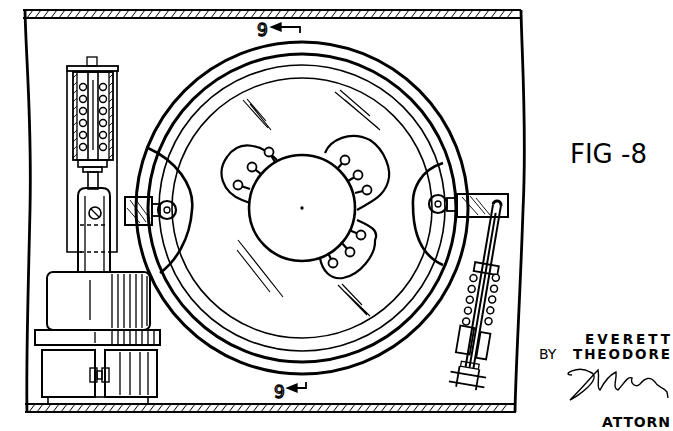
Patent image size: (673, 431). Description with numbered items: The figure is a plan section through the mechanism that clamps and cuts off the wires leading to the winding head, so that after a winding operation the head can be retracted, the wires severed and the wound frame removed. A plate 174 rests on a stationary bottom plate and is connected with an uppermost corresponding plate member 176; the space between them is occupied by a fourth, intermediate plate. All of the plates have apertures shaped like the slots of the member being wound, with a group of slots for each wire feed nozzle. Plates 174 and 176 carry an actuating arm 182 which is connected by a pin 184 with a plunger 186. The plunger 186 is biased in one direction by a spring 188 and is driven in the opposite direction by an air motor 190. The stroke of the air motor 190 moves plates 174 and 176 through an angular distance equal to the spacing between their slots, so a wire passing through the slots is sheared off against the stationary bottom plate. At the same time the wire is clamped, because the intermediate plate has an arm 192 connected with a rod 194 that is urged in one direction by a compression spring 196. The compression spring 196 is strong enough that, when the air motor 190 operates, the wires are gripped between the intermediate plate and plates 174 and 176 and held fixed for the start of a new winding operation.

The plate 174 is at (420, 173).
The uppermost plate member 176 is at (306, 106).
The actuating arm 182 is at (151, 146).
The pin 184 is at (89, 212).
The plunger 186 is at (90, 233).
The spring 188 is at (82, 108).
The air motor 190 is at (150, 323).
The arm 192 is at (468, 192).
The rod 194 is at (497, 250).
The compression spring 196 is at (501, 293).